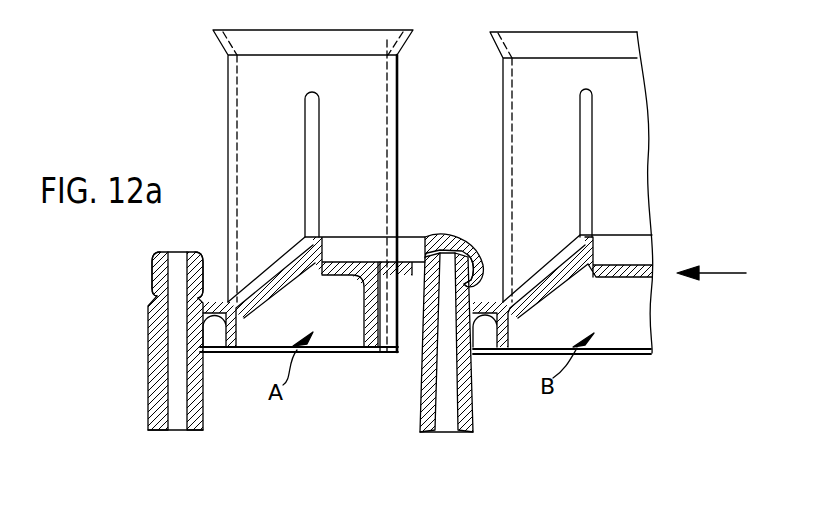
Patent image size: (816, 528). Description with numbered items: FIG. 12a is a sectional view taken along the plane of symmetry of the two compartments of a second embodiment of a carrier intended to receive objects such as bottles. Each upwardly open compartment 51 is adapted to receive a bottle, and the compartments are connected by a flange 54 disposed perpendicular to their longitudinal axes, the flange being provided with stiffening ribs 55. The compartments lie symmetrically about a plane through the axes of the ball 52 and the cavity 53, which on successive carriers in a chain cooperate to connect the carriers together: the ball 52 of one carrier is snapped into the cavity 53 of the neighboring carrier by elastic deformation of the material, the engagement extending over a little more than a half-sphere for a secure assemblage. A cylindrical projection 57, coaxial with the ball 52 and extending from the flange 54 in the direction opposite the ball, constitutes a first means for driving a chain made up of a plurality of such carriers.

The compartment 51 is at (503, 113).
The ball 52 is at (152, 271).
The cavity 53 is at (452, 238).
The flange 54 is at (343, 268).
The stiffening ribs 55 is at (318, 146).
The cylindrical projection 57 is at (148, 346).